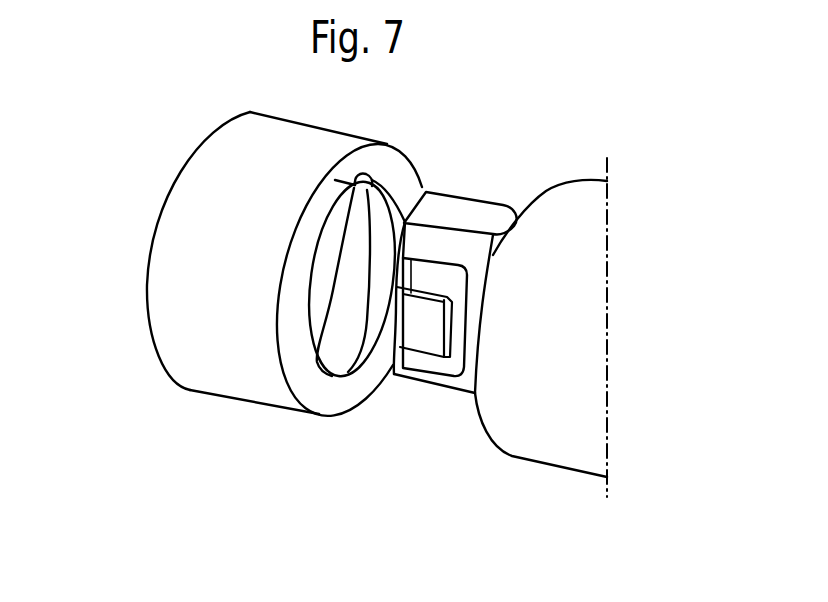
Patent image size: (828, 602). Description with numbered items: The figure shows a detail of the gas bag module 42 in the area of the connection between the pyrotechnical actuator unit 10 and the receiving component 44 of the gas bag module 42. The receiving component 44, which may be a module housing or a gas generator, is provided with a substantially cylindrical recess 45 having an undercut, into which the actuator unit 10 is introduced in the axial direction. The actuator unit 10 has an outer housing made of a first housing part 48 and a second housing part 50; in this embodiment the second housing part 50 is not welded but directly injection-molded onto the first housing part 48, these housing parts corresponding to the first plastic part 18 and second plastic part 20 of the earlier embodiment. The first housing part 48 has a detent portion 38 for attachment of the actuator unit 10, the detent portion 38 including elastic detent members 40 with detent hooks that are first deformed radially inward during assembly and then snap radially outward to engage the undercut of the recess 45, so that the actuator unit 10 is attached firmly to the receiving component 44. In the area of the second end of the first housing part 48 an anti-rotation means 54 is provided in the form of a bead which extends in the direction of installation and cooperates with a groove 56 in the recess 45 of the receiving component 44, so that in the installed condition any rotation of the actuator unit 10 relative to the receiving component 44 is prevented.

The pyrotechnical actuator unit 10 is at (535, 480).
The first plastic part 18 is at (467, 250).
The second plastic part 20 is at (553, 352).
The detent portion 38 is at (446, 402).
The detent members 40 is at (420, 334).
The gas bag module 42 is at (161, 161).
The receiving component 44 is at (221, 362).
The recess 45 is at (331, 340).
The first housing part 48 is at (594, 314).
The second housing part 50 is at (666, 327).
The anti-rotation means 54 is at (460, 208).
The groove 56 is at (366, 177).